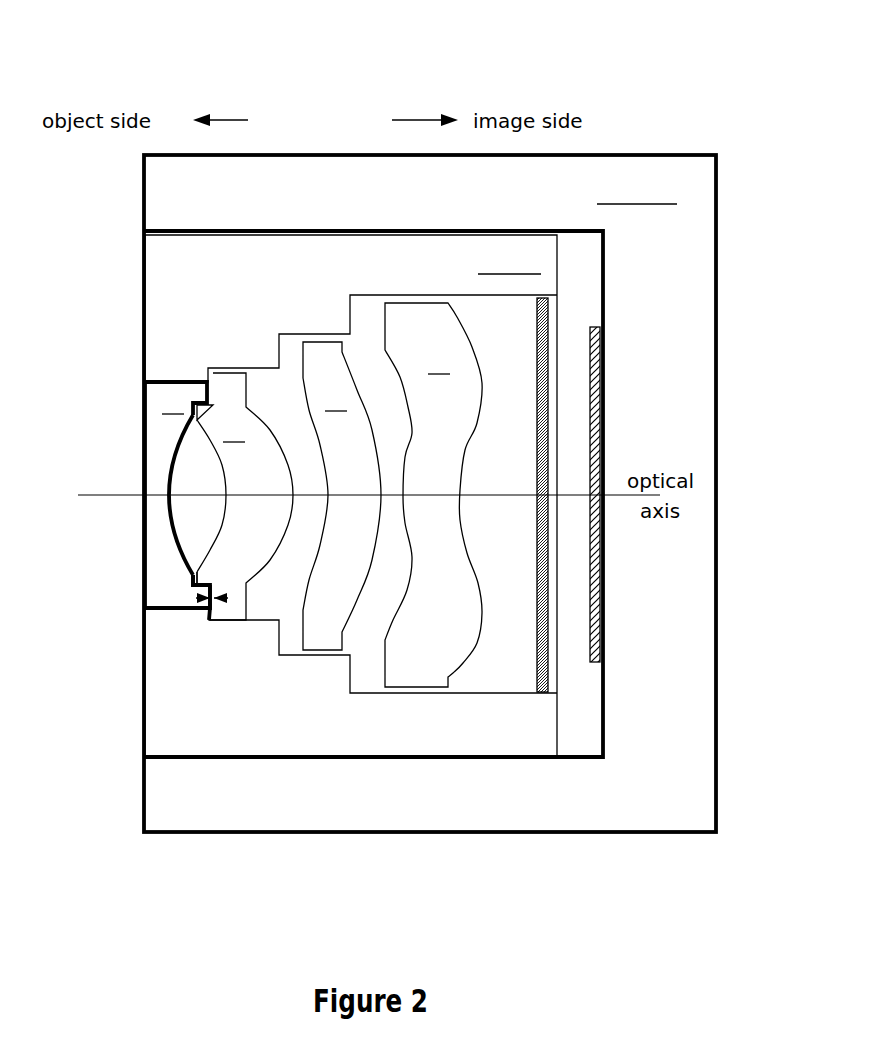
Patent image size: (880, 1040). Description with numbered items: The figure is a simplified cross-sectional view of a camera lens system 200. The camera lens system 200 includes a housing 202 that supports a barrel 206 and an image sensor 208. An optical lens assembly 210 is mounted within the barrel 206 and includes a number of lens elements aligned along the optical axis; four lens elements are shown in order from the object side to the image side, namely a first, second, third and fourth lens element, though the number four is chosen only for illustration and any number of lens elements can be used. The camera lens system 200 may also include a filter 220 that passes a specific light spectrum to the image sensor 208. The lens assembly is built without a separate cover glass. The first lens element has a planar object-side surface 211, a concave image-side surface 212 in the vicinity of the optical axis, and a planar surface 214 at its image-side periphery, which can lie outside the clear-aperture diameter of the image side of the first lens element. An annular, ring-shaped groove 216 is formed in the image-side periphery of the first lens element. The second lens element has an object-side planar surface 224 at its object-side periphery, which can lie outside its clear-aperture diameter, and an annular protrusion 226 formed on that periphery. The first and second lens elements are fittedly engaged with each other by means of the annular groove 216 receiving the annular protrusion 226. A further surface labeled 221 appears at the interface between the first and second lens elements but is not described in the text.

The camera lens system 200 is at (648, 66).
The housing 202 is at (651, 809).
The barrel 206 is at (538, 736).
The image sensor 208 is at (603, 437).
The optical lens assembly 210 is at (470, 698).
The planar object-side surface 211 is at (134, 472).
The concave image-side surface 212 is at (160, 524).
The planar surface 214 is at (200, 597).
The annular groove 216 is at (197, 583).
The filter 220 is at (548, 353).
The lens rear surface 221 is at (227, 467).
The object-side planar surface 224 is at (228, 598).
The annular protrusion 226 is at (201, 582).